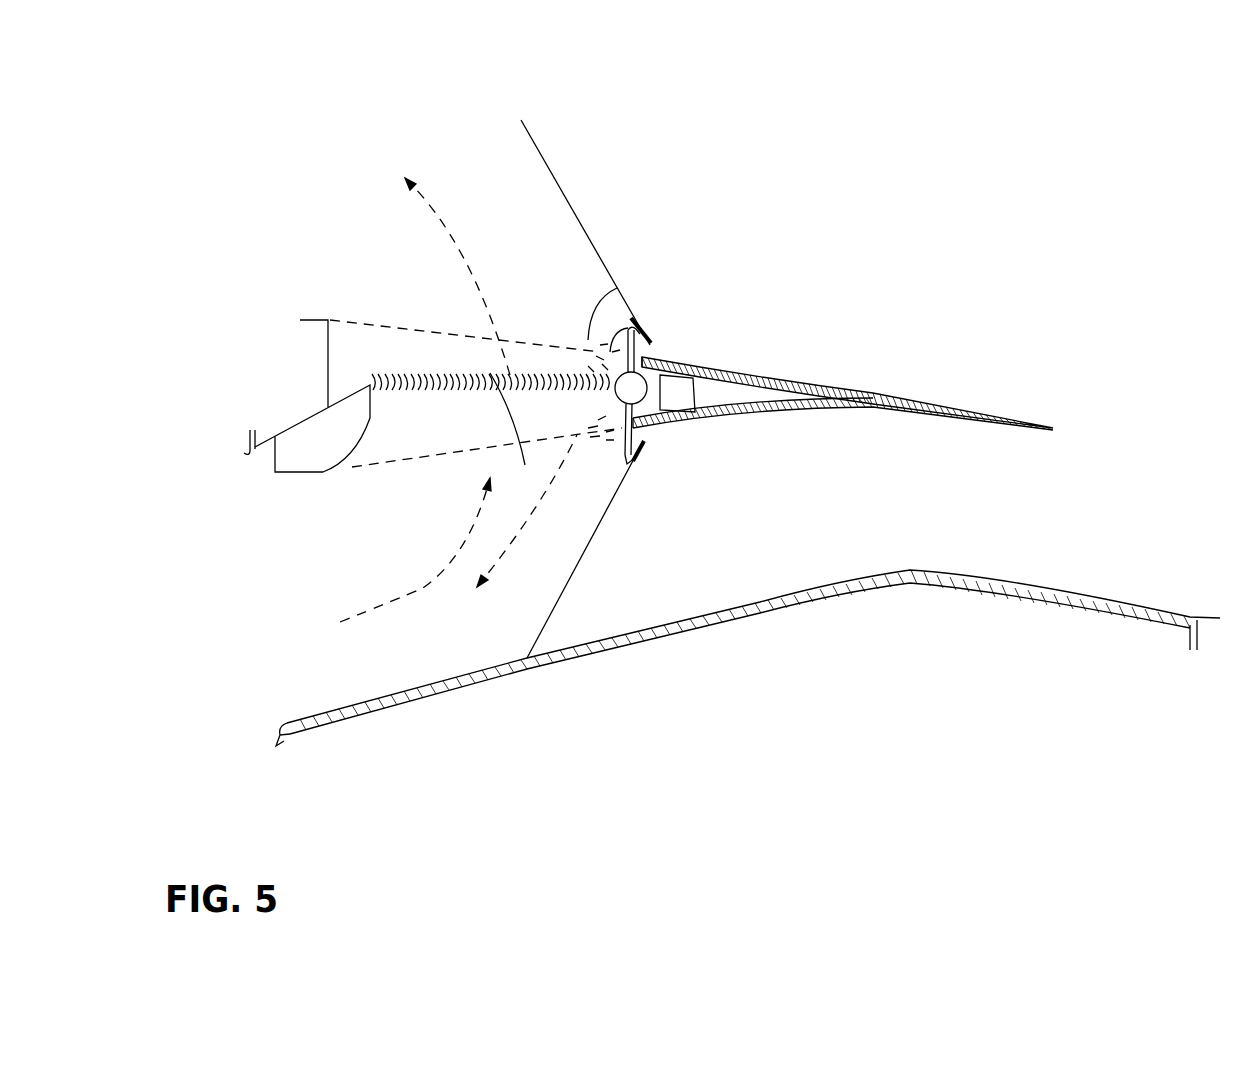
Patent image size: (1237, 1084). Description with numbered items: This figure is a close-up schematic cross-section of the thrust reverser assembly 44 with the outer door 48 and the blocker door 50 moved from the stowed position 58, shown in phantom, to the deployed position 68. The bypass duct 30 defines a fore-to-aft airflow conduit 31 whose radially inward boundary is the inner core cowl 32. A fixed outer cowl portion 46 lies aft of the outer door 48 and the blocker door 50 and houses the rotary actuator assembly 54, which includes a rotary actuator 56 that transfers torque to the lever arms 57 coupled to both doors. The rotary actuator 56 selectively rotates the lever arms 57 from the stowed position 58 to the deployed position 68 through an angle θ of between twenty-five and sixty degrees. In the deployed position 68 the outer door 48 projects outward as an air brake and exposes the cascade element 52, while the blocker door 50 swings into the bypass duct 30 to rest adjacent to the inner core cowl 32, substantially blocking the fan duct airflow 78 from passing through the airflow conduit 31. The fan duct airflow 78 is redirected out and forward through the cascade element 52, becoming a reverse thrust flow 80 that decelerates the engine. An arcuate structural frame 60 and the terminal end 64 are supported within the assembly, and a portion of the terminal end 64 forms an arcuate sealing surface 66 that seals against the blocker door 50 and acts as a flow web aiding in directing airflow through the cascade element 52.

The bypass duct 30 is at (276, 605).
The airflow conduit 31 is at (820, 510).
The inner core cowl 32 is at (742, 618).
The thrust reverser assembly 44 is at (872, 163).
The fixed outer cowl portion 46 is at (755, 375).
The outer door 48 is at (593, 237).
The blocker door 50 is at (605, 518).
The cascade element 52 is at (490, 431).
The rotary actuator assembly 54 is at (648, 360).
The rotary actuator 56 is at (633, 388).
The lever arm 57 is at (605, 350).
The stowed position 58 is at (398, 318).
The arcuate structural frame 60 is at (678, 398).
The terminal end 64 is at (300, 316).
The sealing surface 66 is at (323, 470).
The deployed position 68 is at (579, 176).
The fan duct airflow 78 is at (423, 588).
The reverse thrust flow 80 is at (460, 243).